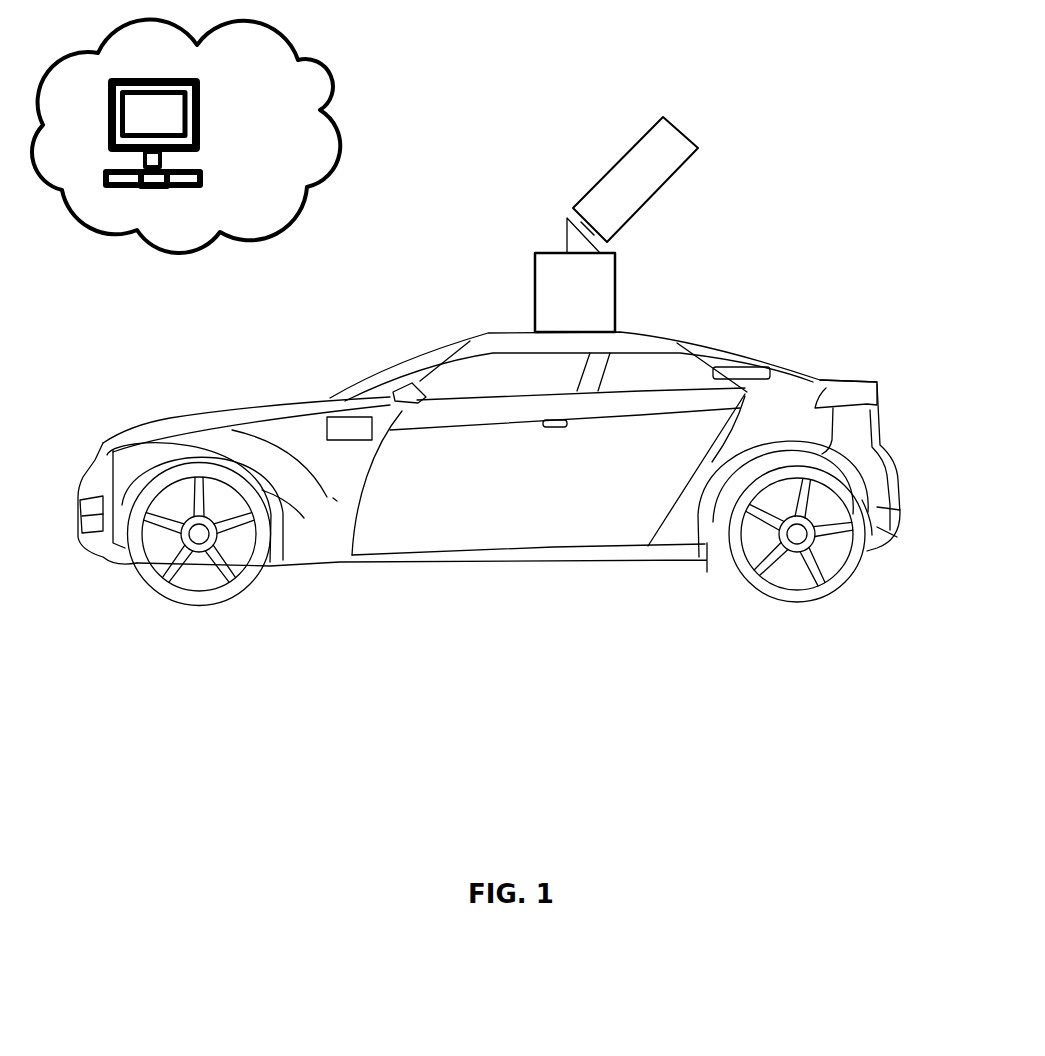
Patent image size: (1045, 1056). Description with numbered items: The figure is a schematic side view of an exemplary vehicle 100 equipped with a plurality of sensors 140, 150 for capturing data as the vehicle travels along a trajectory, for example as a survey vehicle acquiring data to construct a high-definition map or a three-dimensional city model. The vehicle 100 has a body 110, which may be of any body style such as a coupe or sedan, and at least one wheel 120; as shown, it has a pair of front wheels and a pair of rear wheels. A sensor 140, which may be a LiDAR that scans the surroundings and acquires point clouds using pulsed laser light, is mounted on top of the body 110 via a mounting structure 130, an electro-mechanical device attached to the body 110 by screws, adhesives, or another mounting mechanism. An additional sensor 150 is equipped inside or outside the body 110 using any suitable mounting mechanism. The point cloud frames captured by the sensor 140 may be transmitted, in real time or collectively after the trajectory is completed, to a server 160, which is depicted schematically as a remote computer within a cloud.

The vehicle 100 is at (512, 503).
The body 110 is at (512, 467).
The wheel 120 is at (890, 579).
The mounting structure 130 is at (621, 290).
The sensor 140 is at (582, 180).
The sensor 150 is at (340, 407).
The server 160 is at (222, 114).